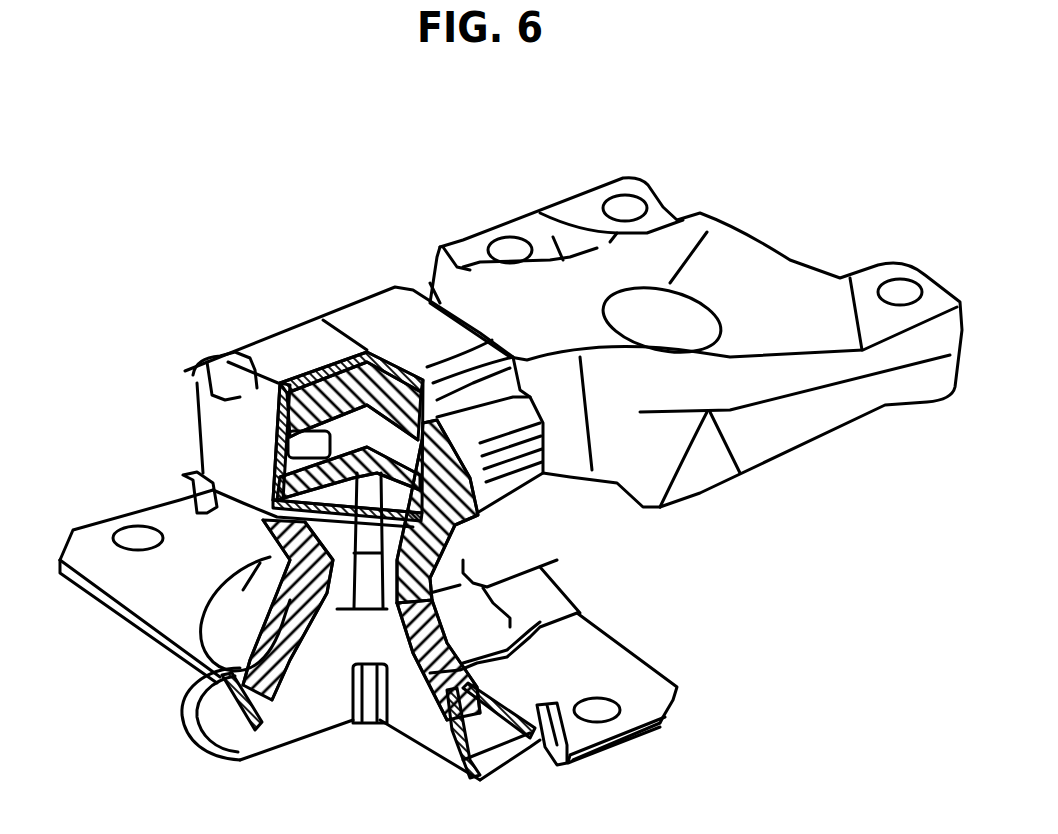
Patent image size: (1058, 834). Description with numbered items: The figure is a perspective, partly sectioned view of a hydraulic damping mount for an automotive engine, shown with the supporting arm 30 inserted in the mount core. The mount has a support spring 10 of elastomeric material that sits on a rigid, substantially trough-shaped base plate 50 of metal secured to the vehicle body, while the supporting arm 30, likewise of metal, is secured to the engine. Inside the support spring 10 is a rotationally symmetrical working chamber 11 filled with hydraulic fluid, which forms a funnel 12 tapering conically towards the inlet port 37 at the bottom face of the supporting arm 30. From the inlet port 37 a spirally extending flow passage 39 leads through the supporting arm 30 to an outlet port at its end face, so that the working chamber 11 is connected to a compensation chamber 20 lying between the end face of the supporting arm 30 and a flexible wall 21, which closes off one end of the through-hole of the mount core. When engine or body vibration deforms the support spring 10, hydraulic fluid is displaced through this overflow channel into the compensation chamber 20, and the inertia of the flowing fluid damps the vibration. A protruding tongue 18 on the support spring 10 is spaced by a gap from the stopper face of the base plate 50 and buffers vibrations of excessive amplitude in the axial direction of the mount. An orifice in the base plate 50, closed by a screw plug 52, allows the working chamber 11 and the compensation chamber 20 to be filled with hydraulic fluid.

The support spring 10 is at (353, 337).
The working chamber 11 is at (297, 700).
The funnel 12 is at (352, 598).
The protruding tongue 18 is at (557, 537).
The compensation chamber 20 is at (253, 533).
The flexible wall 21 is at (200, 407).
The supporting arm 30 is at (789, 258).
The inlet port 37 is at (352, 562).
The flow passage 39 is at (396, 386).
The base plate 50 is at (643, 688).
The screw plug 52 is at (367, 725).